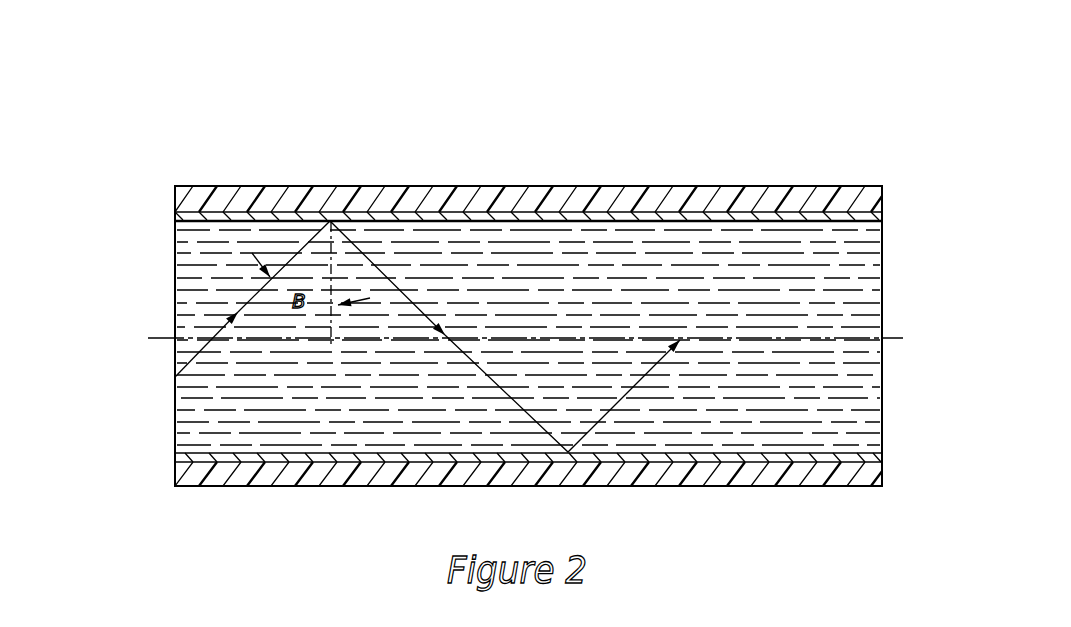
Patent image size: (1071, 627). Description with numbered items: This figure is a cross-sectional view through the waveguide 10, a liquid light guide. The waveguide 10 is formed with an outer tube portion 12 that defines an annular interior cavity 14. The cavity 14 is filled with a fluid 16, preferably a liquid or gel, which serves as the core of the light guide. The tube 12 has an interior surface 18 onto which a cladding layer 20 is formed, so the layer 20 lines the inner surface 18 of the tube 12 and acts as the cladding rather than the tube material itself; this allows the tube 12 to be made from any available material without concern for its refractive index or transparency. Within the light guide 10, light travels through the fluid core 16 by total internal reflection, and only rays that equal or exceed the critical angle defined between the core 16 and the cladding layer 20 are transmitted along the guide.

The waveguide 10 is at (777, 132).
The outer tube portion 12 is at (708, 183).
The annular interior cavity 14 is at (562, 247).
The fluid 16 is at (323, 420).
The interior surface 18 is at (183, 235).
The cladding layer 20 is at (233, 224).